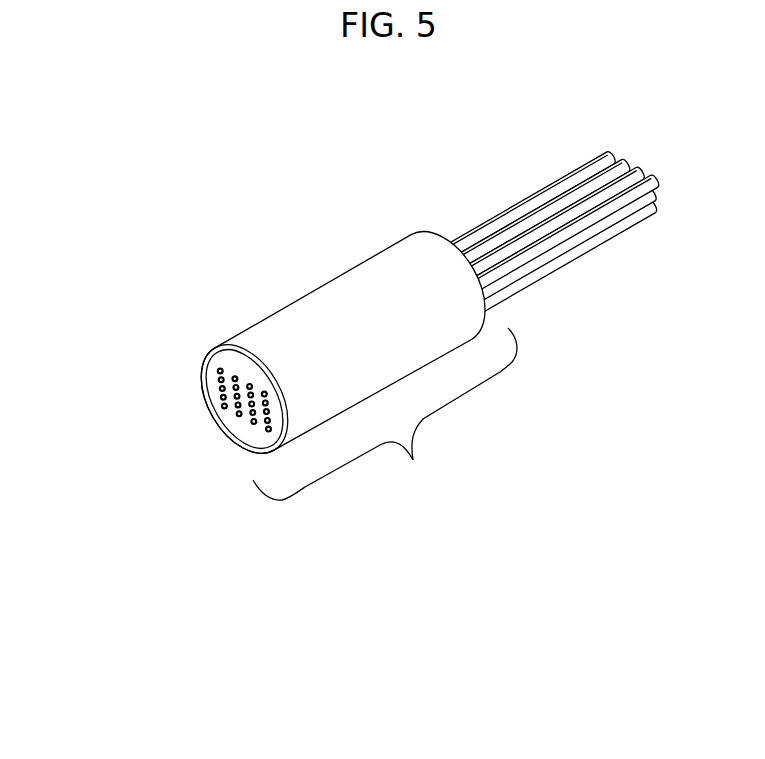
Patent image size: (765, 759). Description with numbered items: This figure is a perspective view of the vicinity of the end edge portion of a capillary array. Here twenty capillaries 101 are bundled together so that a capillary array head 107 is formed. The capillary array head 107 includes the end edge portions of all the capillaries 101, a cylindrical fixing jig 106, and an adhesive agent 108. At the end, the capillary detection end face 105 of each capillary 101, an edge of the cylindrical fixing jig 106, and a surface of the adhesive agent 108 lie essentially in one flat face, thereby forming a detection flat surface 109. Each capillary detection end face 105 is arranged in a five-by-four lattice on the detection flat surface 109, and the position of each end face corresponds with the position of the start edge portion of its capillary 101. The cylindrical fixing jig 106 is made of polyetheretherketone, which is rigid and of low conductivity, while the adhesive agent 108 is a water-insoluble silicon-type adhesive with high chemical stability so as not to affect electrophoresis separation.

The capillary 101 is at (527, 197).
The capillary detection end face 105 is at (220, 372).
The cylindrical fixing jig 106 is at (333, 307).
The capillary array head 107 is at (385, 414).
The adhesive agent 108 is at (232, 425).
The detection flat surface 109 is at (250, 445).